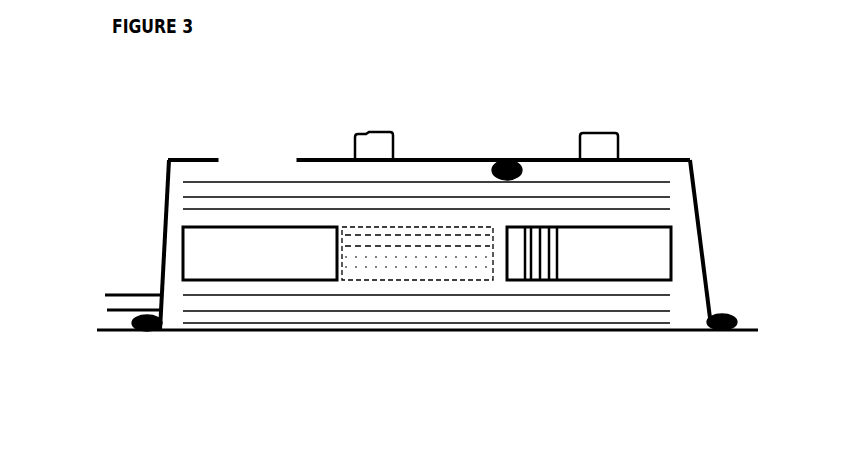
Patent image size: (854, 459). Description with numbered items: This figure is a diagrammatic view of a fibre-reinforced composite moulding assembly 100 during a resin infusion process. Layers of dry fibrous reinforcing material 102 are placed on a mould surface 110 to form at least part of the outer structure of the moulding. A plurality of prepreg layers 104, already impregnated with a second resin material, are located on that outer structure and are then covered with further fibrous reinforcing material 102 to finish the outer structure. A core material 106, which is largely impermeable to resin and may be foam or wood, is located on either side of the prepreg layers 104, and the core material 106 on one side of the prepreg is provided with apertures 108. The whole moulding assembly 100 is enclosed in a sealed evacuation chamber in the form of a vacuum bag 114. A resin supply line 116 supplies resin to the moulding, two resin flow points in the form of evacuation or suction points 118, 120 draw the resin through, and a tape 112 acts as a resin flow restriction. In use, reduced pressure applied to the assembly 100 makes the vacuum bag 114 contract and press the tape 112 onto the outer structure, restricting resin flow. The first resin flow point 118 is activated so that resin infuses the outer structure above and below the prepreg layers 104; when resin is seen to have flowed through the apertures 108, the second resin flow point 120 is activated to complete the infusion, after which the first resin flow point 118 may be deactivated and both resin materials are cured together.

The moulding assembly 100 is at (708, 160).
The dry fibrous reinforcing material 102 is at (648, 297).
The prepreg layers 104 is at (390, 278).
The core material 106 is at (242, 257).
The apertures 108 is at (567, 270).
The mould surface 110 is at (220, 330).
The tape 112 is at (507, 170).
The vacuum bag 114 is at (260, 158).
The resin supply line 116 is at (107, 307).
The first resin flow point 118 is at (358, 138).
The second resin flow point 120 is at (600, 133).